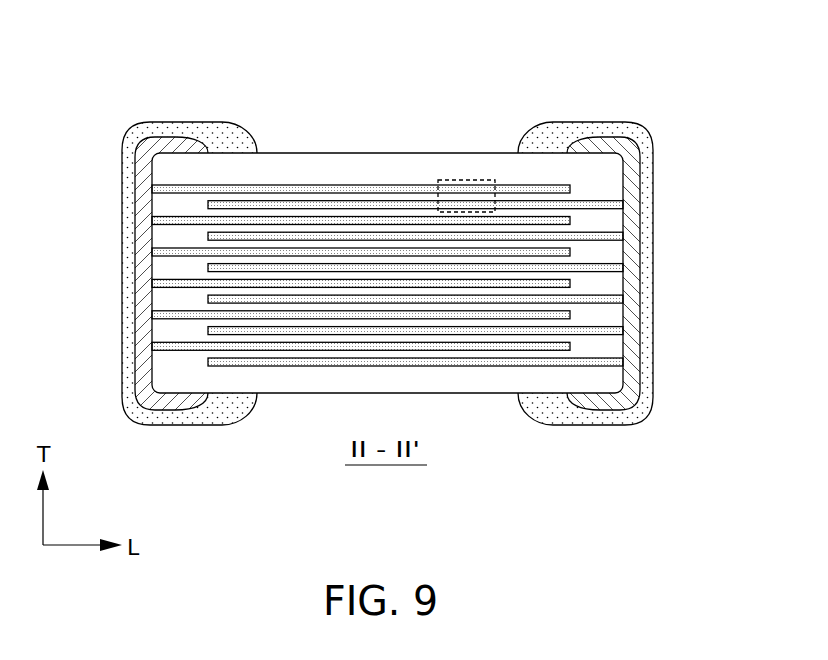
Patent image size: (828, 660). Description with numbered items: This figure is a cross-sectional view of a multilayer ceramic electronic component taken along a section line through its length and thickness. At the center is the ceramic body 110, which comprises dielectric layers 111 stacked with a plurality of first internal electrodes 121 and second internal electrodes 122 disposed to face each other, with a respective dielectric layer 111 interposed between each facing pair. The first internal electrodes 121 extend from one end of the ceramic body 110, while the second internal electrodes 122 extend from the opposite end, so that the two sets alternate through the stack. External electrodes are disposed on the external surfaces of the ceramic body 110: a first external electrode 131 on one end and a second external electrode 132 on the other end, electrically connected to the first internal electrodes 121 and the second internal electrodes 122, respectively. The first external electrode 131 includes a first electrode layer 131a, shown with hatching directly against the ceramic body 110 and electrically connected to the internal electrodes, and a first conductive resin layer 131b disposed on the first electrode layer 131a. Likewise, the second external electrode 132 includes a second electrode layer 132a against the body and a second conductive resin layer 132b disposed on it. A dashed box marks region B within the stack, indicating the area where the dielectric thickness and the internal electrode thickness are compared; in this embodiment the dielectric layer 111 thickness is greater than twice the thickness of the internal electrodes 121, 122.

The ceramic body 110 is at (370, 152).
The dielectric layer 111 is at (173, 202).
The first internal electrode 121 is at (275, 186).
The second internal electrode 122 is at (207, 205).
The first external electrode 131 is at (180, 224).
The first electrode layer 131a is at (186, 150).
The first conductive resin layer 131b is at (217, 52).
The second external electrode 132 is at (596, 234).
The second electrode layer 132a is at (578, 150).
The second conductive resin layer 132b is at (632, 137).
The enlarged region B is at (467, 180).